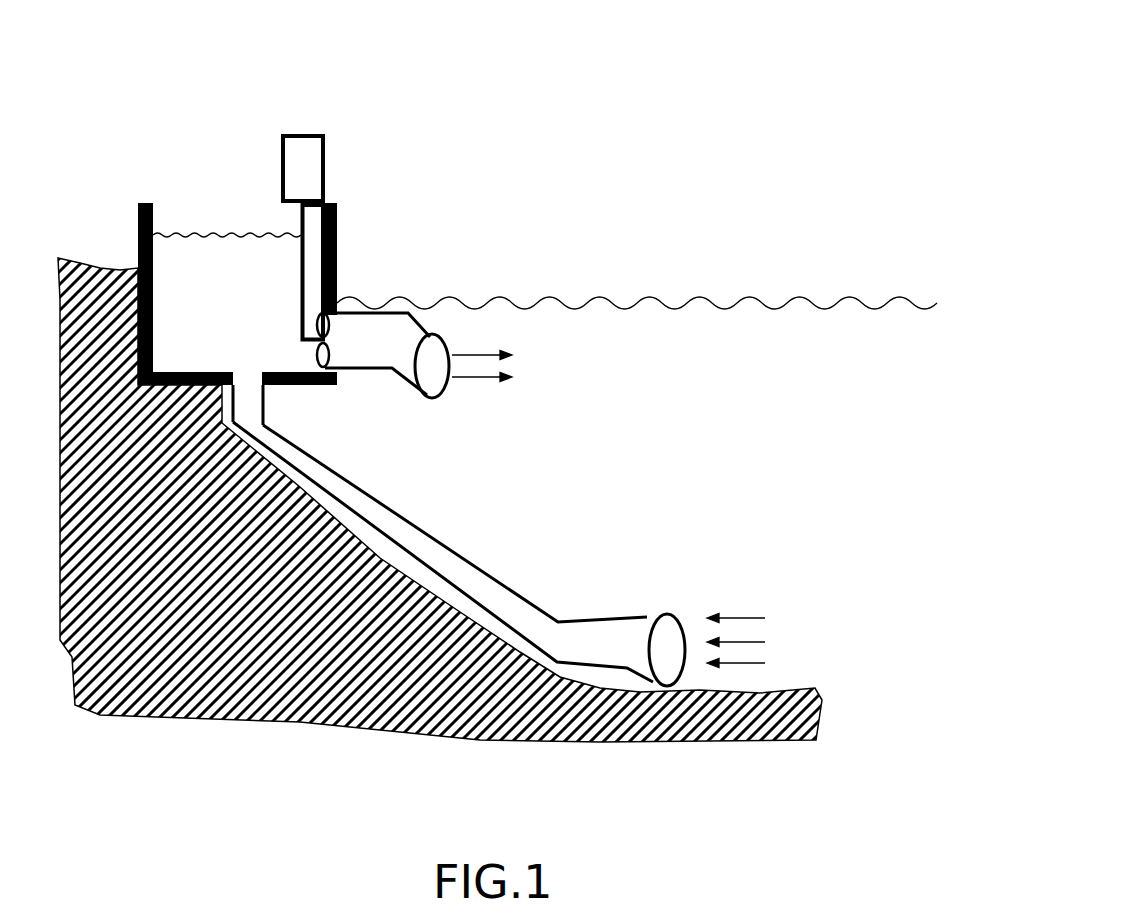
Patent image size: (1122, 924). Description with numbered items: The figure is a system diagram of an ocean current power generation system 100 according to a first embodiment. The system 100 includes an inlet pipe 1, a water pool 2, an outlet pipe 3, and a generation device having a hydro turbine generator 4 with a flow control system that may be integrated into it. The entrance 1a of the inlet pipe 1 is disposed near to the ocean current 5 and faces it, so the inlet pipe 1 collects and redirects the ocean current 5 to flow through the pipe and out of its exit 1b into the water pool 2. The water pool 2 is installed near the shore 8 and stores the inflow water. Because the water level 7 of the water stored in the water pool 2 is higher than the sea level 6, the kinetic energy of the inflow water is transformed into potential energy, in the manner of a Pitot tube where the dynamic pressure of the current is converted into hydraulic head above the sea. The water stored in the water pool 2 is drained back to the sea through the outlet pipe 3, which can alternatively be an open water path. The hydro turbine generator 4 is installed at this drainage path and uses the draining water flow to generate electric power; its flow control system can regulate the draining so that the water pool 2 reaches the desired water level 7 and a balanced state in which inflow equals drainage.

The ocean current power generation system 100 is at (487, 345).
The inlet pipe 1 is at (474, 561).
The entrance 1a is at (675, 610).
The exit 1b is at (276, 395).
The water pool 2 is at (150, 197).
The outlet pipe 3 is at (442, 338).
The hydro turbine generator 4 is at (312, 130).
The ocean current 5 is at (765, 608).
The sea level 6 is at (798, 301).
The water level 7 is at (197, 224).
The shore 8 is at (96, 258).